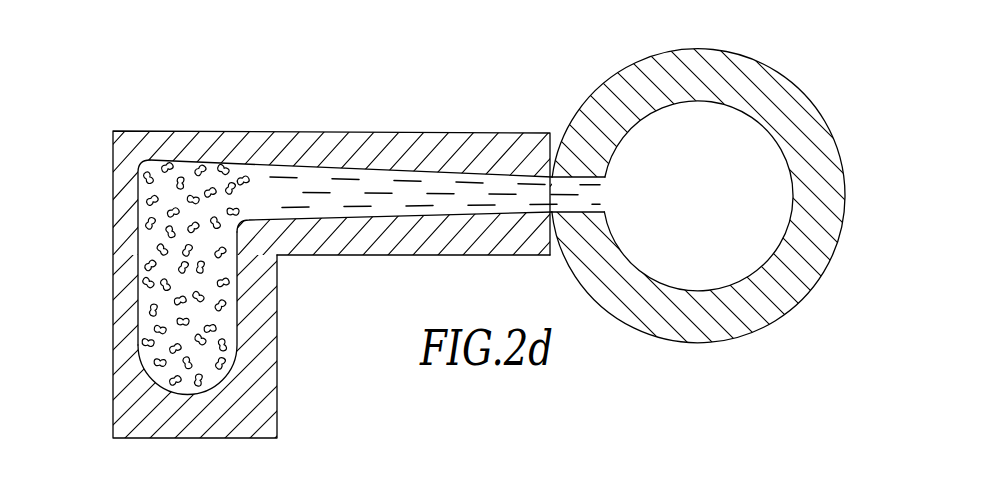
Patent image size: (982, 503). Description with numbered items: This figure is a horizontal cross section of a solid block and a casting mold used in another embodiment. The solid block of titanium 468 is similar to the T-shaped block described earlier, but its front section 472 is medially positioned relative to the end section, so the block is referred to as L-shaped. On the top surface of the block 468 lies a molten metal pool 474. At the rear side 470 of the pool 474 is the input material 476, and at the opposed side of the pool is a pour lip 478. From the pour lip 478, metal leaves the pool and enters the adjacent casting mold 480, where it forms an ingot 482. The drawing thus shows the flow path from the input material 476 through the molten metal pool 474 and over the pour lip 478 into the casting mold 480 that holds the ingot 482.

The solid block of titanium 468 is at (293, 88).
The rear side 470 is at (113, 150).
The front section 472 is at (377, 257).
The molten metal pool 474 is at (402, 177).
The input material 476 is at (128, 217).
The pour lip 478 is at (590, 190).
The casting mold 480 is at (810, 105).
The ingot 482 is at (780, 186).